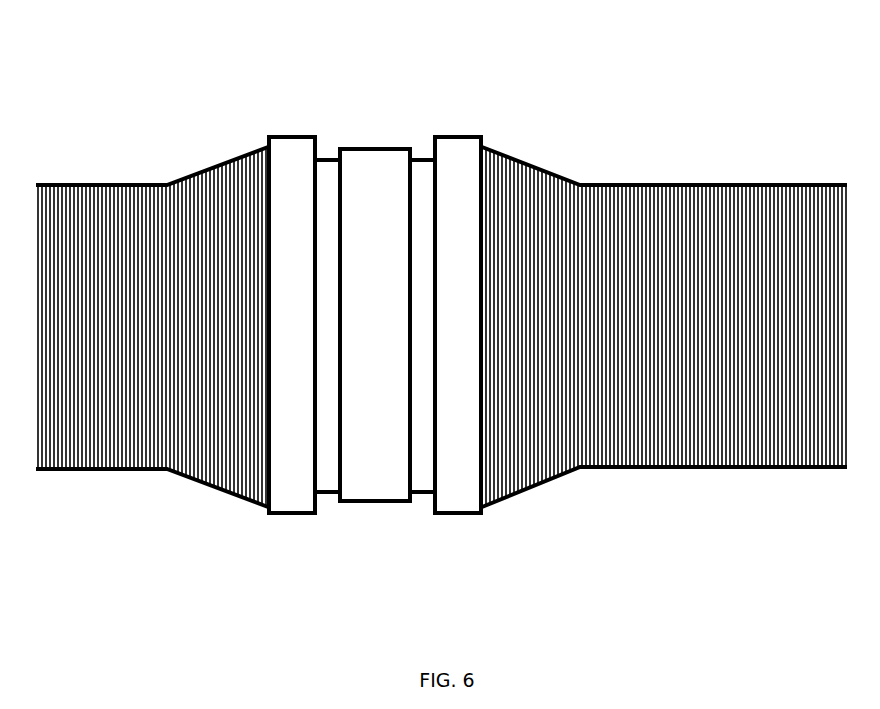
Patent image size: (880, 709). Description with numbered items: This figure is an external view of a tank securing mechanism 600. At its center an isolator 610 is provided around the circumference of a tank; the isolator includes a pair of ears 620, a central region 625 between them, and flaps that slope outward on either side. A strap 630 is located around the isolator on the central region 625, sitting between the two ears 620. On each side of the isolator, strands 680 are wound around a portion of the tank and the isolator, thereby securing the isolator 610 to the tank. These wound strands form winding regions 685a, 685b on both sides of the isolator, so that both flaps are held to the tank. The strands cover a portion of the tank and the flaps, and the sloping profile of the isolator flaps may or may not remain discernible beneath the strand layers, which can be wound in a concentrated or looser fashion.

The optical fiber splice assembly 600 is at (441, 313).
The isolator 610 is at (371, 313).
The ears 620 is at (291, 150).
The central region 625 is at (328, 172).
The strap 630 is at (375, 160).
The strands 680 is at (699, 221).
The winding region 685a is at (150, 101).
The winding region 685b is at (664, 275).